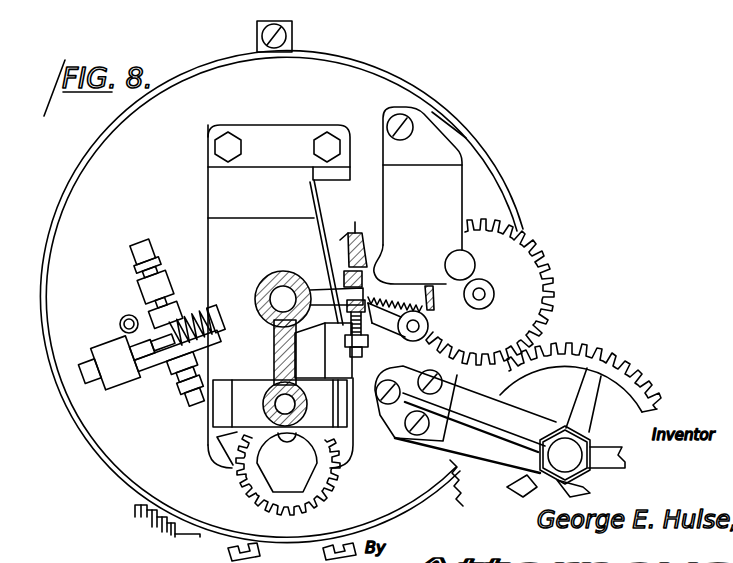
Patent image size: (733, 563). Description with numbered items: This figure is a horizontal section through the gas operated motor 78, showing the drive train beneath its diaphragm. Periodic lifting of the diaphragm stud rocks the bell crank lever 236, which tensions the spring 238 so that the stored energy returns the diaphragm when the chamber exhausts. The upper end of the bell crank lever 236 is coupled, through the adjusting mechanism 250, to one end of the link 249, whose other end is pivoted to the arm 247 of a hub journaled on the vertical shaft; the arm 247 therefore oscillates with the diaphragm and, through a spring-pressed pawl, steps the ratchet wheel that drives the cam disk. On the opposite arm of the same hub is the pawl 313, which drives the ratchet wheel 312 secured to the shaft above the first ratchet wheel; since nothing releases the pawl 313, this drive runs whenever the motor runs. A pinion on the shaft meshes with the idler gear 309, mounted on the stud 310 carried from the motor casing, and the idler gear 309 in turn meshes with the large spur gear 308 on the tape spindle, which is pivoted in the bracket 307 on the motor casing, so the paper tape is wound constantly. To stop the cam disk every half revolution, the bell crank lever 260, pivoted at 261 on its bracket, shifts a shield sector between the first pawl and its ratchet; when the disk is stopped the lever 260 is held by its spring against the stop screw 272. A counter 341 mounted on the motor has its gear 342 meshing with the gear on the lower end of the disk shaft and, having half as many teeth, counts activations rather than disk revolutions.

The gas operated motor 78 is at (93, 170).
The bell crank lever 236 is at (118, 382).
The spring 238 is at (169, 290).
The arm 247 is at (428, 337).
The link 249 is at (382, 313).
The adjusting mechanism 250 is at (130, 355).
The bell crank lever 260 is at (358, 230).
The pivot 261 is at (427, 310).
The stop screw 272 is at (333, 273).
The bracket 307 is at (448, 438).
The large spur gear 308 is at (566, 362).
The idler gear 309 is at (535, 283).
The stud 310 is at (480, 303).
The ratchet wheel 312 is at (400, 294).
The pawl 313 is at (383, 207).
The counter 341 is at (278, 477).
The gear 342 is at (248, 475).